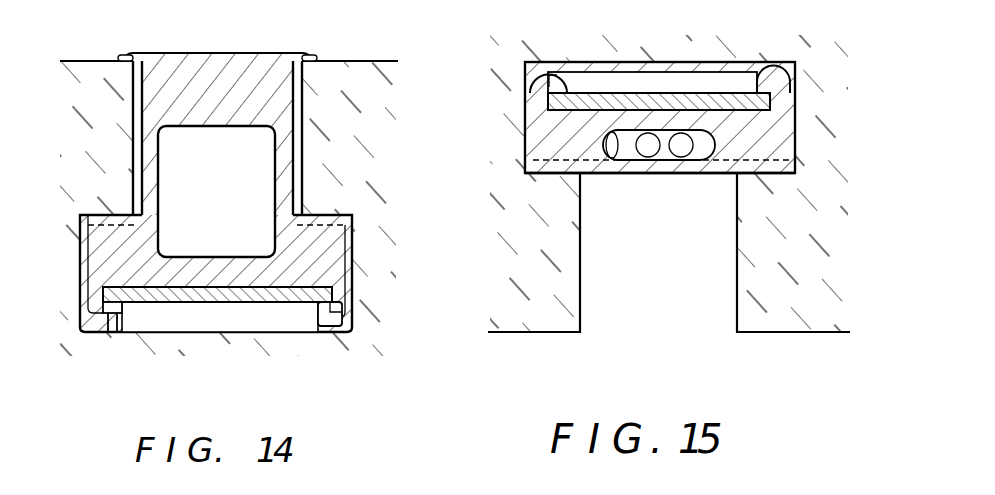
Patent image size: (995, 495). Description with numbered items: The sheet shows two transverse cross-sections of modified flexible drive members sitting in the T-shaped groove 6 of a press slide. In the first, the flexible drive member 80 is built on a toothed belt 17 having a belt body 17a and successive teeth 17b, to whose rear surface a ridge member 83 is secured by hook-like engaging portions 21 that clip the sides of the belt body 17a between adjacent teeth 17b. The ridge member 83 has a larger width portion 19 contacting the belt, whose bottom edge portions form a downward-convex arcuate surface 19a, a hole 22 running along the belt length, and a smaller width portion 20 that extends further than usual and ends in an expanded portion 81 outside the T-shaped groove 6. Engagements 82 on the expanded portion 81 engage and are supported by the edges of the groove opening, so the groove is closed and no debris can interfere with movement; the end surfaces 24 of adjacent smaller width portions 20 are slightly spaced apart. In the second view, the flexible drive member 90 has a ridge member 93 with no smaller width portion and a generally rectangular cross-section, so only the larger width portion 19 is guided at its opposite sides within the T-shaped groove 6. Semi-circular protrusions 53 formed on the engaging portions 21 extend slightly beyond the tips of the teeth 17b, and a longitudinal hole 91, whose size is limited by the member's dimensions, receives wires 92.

In FIG. 14, the T-shaped groove 6 is at (82, 318).
In FIG. 15, the T-shaped groove 6 is at (737, 312).
In FIG. 14, the toothed belt 17 is at (231, 314).
In FIG. 15, the toothed belt 17 is at (701, 86).
In FIG. 14, the belt body 17a is at (318, 310).
In FIG. 15, the belt body 17a is at (773, 87).
In FIG. 14, the teeth 17b is at (267, 318).
In FIG. 15, the teeth 17b is at (638, 85).
In FIG. 14, the larger width portion 19 is at (327, 257).
In FIG. 15, the larger width portion 19 is at (763, 150).
In FIG. 14, the arcuate surface 19a is at (330, 217).
In FIG. 15, the arcuate surface 19a is at (767, 177).
In FIG. 14, the smaller width portion 20 is at (292, 133).
In FIG. 15, the engaging portions 21 is at (568, 85).
In FIG. 14, the hole 22 is at (162, 160).
In FIG. 14, the end surfaces 24 is at (115, 333).
In FIG. 15, the protrusions 53 is at (528, 62).
In FIG. 14, the flexible drive member 80 is at (262, 45).
In FIG. 14, the expanded portion 81 is at (193, 77).
In FIG. 14, the engagements 82 is at (128, 53).
In FIG. 14, the ridge member 83 is at (233, 50).
In FIG. 15, the flexible drive member 90 is at (693, 182).
In FIG. 15, the longitudinal hole 91 is at (608, 158).
In FIG. 15, the wires 92 is at (668, 160).
In FIG. 15, the ridge member 93 is at (717, 184).